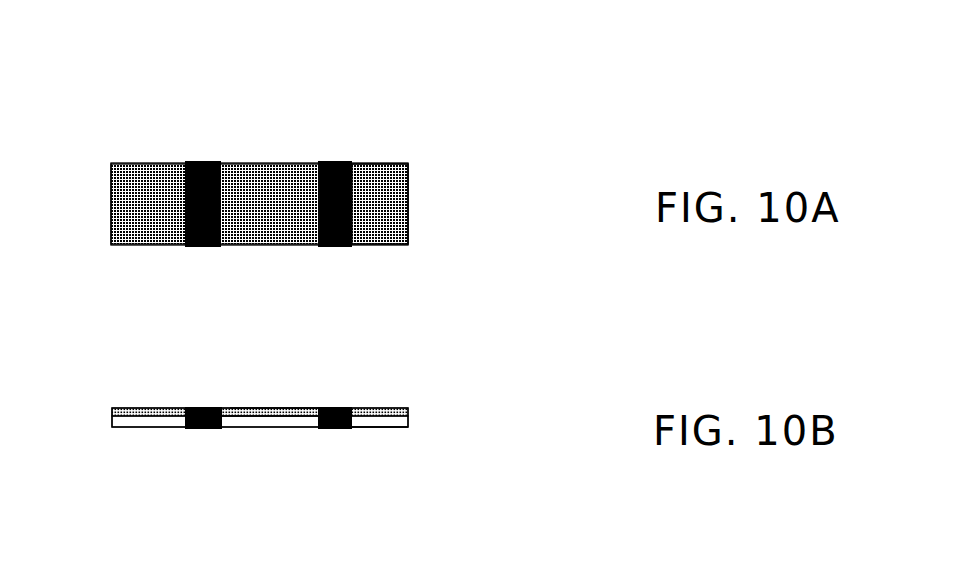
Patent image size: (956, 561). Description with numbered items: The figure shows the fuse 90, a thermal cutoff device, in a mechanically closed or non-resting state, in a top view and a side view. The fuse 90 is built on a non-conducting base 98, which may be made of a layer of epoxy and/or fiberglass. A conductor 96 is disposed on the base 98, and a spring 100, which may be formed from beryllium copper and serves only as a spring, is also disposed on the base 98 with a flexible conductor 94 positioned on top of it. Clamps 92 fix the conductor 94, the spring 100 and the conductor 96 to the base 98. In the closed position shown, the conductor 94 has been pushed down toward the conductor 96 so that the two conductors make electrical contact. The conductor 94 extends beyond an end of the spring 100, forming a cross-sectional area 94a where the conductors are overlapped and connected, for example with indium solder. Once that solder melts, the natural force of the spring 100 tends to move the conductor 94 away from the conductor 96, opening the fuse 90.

In FIG. 10A, the fuse 90 is at (540, 156).
In FIG. 10B, the fuse 90 is at (557, 452).
In FIG. 10A, the clamps 92 is at (212, 157).
In FIG. 10B, the clamps 92 is at (200, 435).
In FIG. 10A, the conductor 94 is at (262, 217).
In FIG. 10B, the conductor 94 is at (255, 407).
In FIG. 10B, the cross-sectional area 94a is at (300, 408).
In FIG. 10A, the conductor 96 is at (396, 166).
In FIG. 10B, the conductor 96 is at (380, 410).
In FIG. 10B, the non-conducting base 98 is at (390, 433).
In FIG. 10B, the spring 100 is at (280, 427).